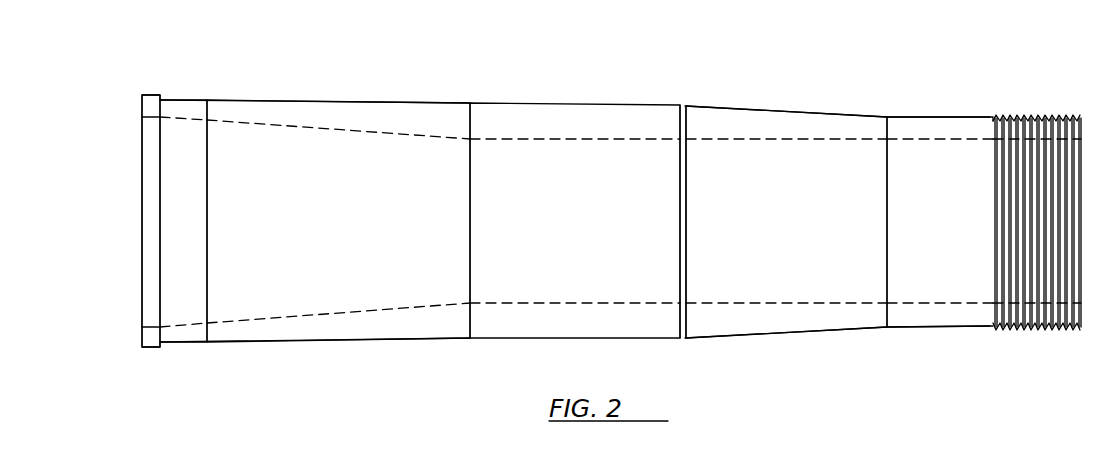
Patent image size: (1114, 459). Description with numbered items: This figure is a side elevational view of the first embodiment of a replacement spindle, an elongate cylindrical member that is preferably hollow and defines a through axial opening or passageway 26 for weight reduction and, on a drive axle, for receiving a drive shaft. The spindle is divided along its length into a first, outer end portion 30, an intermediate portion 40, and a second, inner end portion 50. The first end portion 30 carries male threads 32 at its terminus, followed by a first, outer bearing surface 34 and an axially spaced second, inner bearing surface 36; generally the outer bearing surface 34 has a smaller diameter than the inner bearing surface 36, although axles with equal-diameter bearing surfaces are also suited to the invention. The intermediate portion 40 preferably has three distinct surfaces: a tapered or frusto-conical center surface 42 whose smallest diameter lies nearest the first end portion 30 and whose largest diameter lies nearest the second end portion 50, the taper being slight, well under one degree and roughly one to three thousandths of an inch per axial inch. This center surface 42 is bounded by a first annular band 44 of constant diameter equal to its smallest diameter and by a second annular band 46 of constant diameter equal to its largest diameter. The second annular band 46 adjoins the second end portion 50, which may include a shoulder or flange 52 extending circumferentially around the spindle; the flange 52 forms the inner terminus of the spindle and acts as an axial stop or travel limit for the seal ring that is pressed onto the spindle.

The through axial opening or passageway 26 is at (786, 222).
The first (outer) end portion or region 30 is at (1075, 88).
The male threads 32 is at (1033, 331).
The first, outer bearing surface 34 is at (923, 328).
The second, inner bearing surface 36 is at (663, 339).
The intermediate portion or region 40 is at (491, 88).
The tapered or frusto-conical center region or surface 42 is at (343, 236).
The first annular band or surface 44 is at (593, 236).
The second annular band or surface 46 is at (198, 236).
The second (inner) end portion or region 50 is at (148, 90).
The shoulder or flange 52 is at (150, 347).